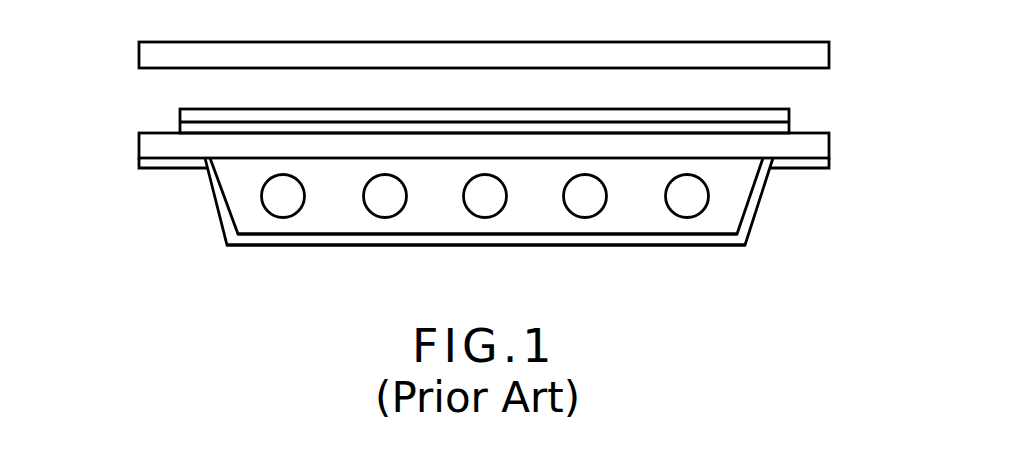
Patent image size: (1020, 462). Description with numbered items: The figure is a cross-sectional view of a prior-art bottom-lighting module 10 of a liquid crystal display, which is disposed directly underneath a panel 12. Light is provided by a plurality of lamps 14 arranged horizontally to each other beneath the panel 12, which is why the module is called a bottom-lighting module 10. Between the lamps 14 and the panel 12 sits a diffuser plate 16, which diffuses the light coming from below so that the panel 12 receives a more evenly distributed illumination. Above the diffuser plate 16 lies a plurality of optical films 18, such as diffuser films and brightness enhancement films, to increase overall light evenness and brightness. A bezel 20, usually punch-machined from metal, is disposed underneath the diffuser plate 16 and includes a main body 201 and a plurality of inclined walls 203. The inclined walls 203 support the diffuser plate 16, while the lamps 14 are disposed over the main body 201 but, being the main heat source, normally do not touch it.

The bottom-lighting module 10 is at (122, 144).
The panel 12 is at (829, 48).
The lamp 14 is at (688, 206).
The diffuser plate 16 is at (829, 142).
The optical film 18 is at (789, 122).
The bezel 20 is at (829, 164).
The main body 201 is at (510, 246).
The inclined wall 203 is at (208, 198).